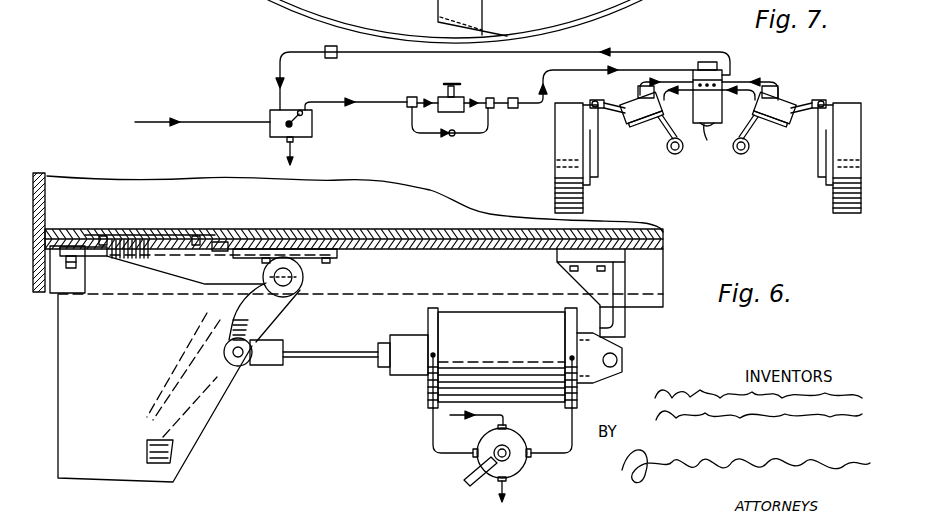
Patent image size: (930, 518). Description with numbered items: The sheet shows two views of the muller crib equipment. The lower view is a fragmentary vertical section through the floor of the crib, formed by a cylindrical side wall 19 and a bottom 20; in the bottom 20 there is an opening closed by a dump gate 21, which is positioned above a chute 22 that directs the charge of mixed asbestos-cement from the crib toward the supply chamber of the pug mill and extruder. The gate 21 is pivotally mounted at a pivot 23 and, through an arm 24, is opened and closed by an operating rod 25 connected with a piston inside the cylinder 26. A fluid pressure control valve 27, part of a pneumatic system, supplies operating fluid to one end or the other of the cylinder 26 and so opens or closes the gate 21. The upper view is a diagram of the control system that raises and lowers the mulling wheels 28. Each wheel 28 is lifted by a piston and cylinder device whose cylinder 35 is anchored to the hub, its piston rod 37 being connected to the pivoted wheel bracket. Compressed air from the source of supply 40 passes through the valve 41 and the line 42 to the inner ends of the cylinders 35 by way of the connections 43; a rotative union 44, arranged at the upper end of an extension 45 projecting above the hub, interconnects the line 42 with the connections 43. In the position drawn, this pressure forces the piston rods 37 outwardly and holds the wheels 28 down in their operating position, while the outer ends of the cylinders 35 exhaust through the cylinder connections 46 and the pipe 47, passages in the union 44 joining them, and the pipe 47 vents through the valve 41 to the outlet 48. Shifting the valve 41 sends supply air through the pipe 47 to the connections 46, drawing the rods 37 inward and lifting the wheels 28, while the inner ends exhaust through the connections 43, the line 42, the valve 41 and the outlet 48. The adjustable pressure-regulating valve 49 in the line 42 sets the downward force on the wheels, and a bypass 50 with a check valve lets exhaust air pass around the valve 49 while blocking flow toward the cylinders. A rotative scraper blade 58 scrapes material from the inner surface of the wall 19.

In FIG. 6, the cylindrical side wall 19 is at (45, 208).
In FIG. 6, the bottom 20 is at (328, 228).
In FIG. 6, the dump gate 21 is at (140, 226).
In FIG. 6, the chute 22 is at (213, 422).
In FIG. 6, the pivot 23 is at (296, 286).
In FIG. 6, the arm 24 is at (268, 312).
In FIG. 6, the operating rod 25 is at (313, 357).
In FIG. 6, the cylinder 26 is at (427, 404).
In FIG. 6, the fluid pressure control valve 27 is at (520, 474).
In FIG. 7, the mulling wheels 28 is at (583, 202).
In FIG. 7, the cylinder 35 is at (648, 122).
In FIG. 7, the piston rod 37 is at (617, 112).
In FIG. 7, the source of supply of operating fluid 40 is at (148, 122).
In FIG. 7, the valve 41 is at (312, 128).
In FIG. 7, the line 42 is at (396, 101).
In FIG. 7, the cylinder connections 43 is at (663, 96).
In FIG. 7, the rotative union 44 is at (728, 80).
In FIG. 7, the extension 45 is at (703, 141).
In FIG. 7, the cylinder connections 46 is at (636, 88).
In FIG. 7, the pipe 47 is at (622, 51).
In FIG. 7, the outlet 48 is at (283, 146).
In FIG. 7, the pressure-regulating valve 49 is at (478, 80).
In FIG. 7, the bypass 50 is at (438, 135).
In FIG. 7, the rotative scraper blade 58 is at (490, 28).